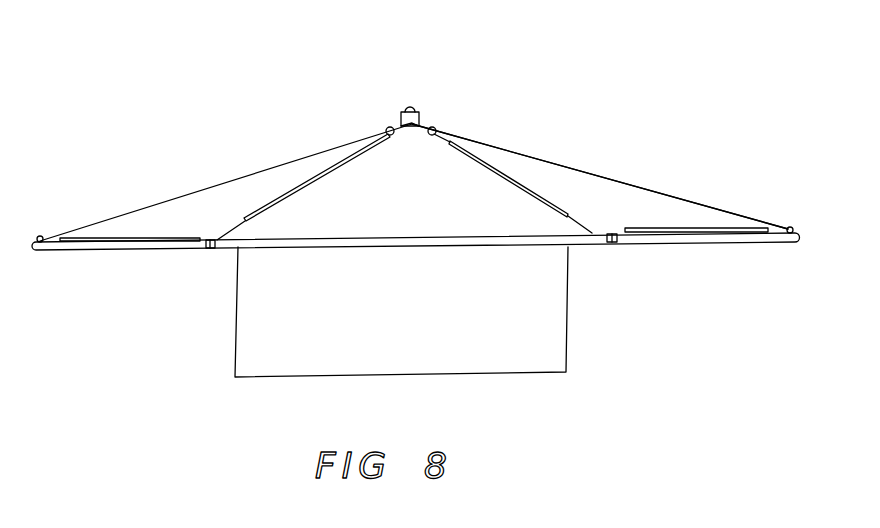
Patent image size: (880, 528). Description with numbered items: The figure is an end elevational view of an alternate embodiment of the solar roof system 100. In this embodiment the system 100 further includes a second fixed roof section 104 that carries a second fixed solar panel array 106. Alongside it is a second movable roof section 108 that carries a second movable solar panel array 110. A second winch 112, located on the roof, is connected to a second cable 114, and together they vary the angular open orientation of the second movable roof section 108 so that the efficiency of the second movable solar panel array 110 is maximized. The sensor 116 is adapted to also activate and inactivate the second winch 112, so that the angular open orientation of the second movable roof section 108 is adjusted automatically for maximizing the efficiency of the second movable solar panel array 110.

The system 100 is at (237, 122).
The second fixed roof section 104 is at (583, 242).
The second fixed solar panel array 106 is at (482, 160).
The second movable roof section 108 is at (775, 242).
The second movable solar panel array 110 is at (698, 227).
The second winch 112 is at (436, 127).
The second cable 114 is at (612, 179).
The sensor 116 is at (403, 109).